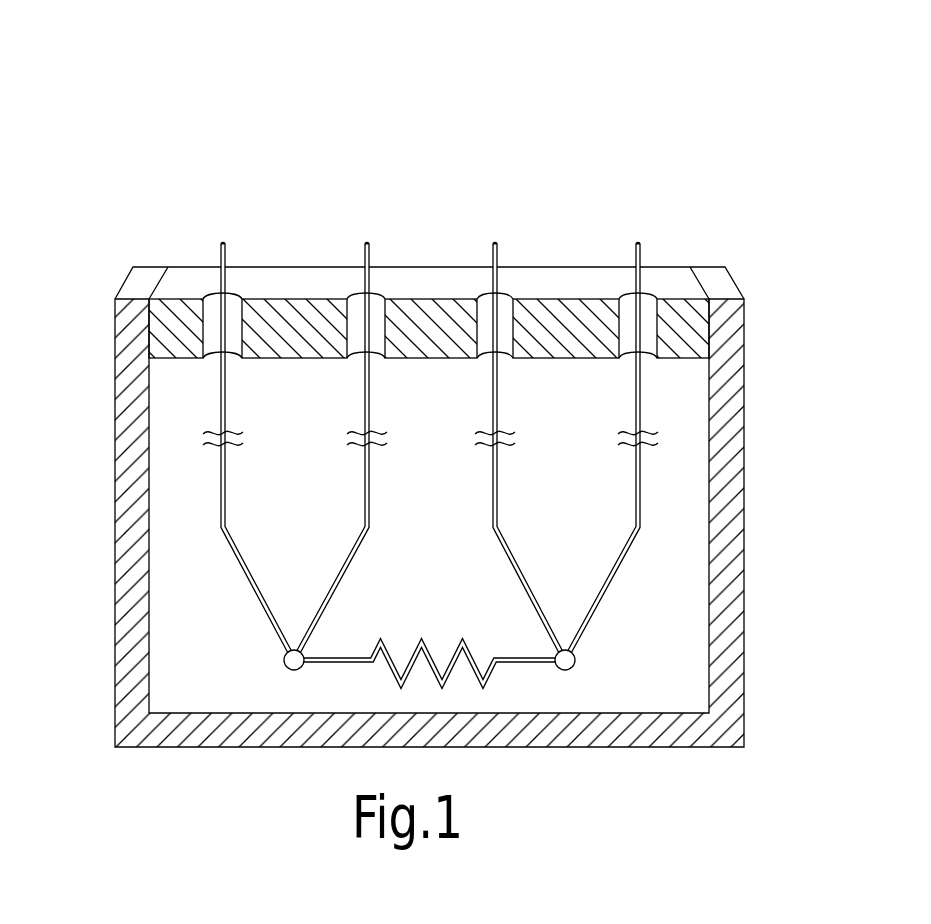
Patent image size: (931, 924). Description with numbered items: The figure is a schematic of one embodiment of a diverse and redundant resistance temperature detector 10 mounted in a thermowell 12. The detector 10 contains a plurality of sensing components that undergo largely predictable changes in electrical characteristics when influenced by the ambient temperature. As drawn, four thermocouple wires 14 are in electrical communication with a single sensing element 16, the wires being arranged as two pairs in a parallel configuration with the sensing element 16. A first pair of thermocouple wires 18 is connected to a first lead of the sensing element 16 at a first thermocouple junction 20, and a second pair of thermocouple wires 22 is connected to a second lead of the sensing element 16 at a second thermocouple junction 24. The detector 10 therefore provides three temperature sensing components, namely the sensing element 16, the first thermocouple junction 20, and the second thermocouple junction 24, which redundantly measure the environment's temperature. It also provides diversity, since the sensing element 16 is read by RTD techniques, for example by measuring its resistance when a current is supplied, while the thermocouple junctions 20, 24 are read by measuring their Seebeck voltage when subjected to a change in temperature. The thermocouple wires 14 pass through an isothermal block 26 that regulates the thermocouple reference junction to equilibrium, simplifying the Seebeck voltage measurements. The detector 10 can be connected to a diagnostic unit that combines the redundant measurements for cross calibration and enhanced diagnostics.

The diverse and redundant resistance temperature detector 10 is at (731, 96).
The thermowell 12 is at (131, 262).
The thermocouple wires 14 is at (430, 380).
The sensing element 16 is at (428, 616).
The first pair of thermocouple wires 18 is at (229, 237).
The first thermocouple junction 20 is at (287, 657).
The second pair of thermocouple wires 22 is at (501, 237).
The second thermocouple junction 24 is at (568, 668).
The isothermal block 26 is at (678, 283).